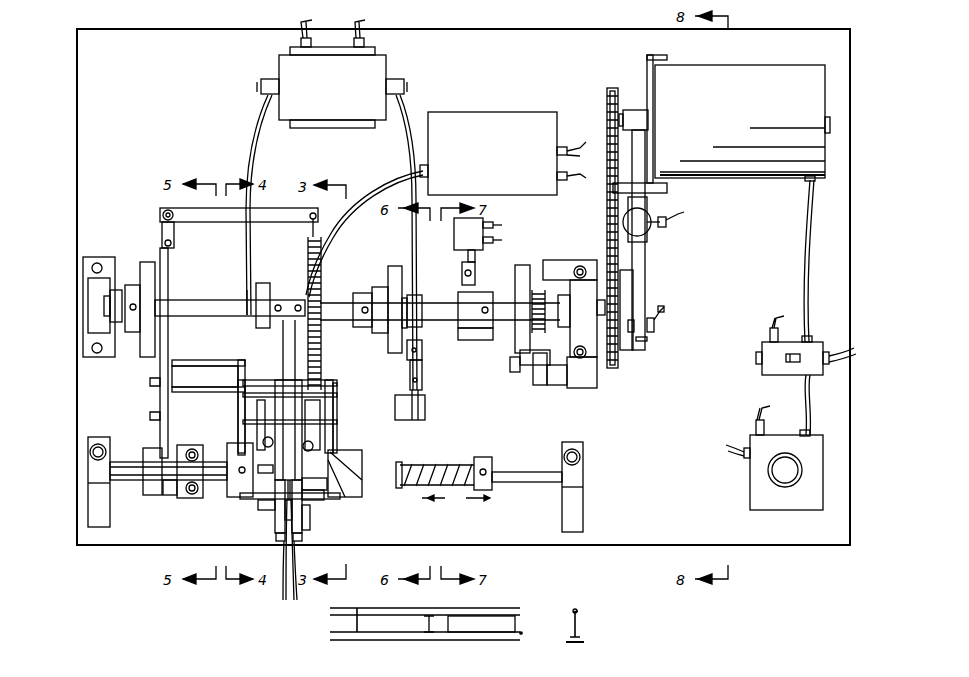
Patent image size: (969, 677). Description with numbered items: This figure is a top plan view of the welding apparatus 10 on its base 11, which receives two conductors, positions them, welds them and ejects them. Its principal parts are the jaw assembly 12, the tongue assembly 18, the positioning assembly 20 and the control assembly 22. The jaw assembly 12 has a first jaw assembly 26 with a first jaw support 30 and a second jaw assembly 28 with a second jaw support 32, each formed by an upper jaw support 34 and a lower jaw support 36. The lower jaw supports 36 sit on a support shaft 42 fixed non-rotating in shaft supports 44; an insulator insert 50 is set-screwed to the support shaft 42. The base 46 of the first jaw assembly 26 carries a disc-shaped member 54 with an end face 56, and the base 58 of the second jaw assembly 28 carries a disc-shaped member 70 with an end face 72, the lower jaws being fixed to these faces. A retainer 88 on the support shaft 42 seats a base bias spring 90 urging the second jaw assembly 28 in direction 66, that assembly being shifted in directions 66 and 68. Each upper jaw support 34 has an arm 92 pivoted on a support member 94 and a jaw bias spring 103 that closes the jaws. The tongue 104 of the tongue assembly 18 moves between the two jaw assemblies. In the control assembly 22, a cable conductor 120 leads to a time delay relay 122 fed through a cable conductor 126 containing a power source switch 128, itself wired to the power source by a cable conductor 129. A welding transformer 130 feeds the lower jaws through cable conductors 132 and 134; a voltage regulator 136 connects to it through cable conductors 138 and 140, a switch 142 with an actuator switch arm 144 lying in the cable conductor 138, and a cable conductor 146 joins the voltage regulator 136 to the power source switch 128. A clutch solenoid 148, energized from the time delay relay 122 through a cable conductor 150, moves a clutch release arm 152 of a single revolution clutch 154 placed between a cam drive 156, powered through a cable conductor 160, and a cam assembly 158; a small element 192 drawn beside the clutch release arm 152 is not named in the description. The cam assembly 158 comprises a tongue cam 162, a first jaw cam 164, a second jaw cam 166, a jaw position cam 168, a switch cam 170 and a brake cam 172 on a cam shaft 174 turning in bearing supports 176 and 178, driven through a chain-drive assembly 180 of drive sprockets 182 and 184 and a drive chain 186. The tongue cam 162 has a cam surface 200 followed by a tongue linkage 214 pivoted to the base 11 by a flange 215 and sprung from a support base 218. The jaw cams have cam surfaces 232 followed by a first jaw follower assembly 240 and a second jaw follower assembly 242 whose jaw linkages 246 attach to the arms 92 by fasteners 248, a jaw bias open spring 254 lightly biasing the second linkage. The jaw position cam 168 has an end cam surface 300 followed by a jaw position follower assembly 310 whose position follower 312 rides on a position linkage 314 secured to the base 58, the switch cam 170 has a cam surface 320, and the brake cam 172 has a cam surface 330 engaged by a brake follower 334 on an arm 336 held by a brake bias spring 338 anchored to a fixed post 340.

The welding apparatus 10 is at (205, 103).
The base 11 is at (768, 545).
The jaw assembly 12 is at (272, 535).
The tongue assembly 18 is at (292, 505).
The positioning assembly 20 is at (430, 412).
The control assembly 22 is at (520, 106).
The first jaw assembly 26 is at (242, 515).
The second jaw assembly 28 is at (305, 535).
The first jaw support 30 is at (272, 518).
The second jaw support 32 is at (322, 500).
The upper jaw support 34 is at (232, 455).
The lower jaw support 36 is at (279, 542).
The support shaft 42 is at (526, 478).
The shaft support 44 is at (90, 510).
The base 46 is at (264, 510).
The insulator insert 50 is at (190, 448).
The disc-shaped member 54 is at (281, 568).
The end face 56 is at (284, 616).
The base 58 is at (345, 478).
The direction 66 is at (448, 502).
The direction 68 is at (482, 502).
The disc-shaped member 70 is at (308, 522).
The end face 72 is at (293, 568).
The retainer 88 is at (492, 462).
The base bias spring 90 is at (455, 470).
The arm 92 is at (250, 410).
The support member 94 is at (266, 402).
The jaw bias spring 103 is at (263, 440).
The tongue 104 is at (284, 372).
The cable conductor 120 is at (402, 173).
The time delay relay 122 is at (480, 121).
The cable conductor 126 is at (580, 176).
The power source switch 128 is at (761, 357).
The cable conductor 129 is at (840, 342).
The welding transformer 130 is at (282, 60).
The cable conductor 132 is at (264, 103).
The cable conductor 134 is at (411, 230).
The voltage regulator 136 is at (785, 500).
The cable conductor 138 is at (367, 24).
The cable conductor 140 is at (300, 24).
The switch 142 is at (456, 242).
The actuator switch arm 144 is at (462, 278).
The cable conductor 146 is at (810, 403).
The clutch solenoid 148 is at (660, 230).
The cable conductor 150 is at (585, 142).
The clutch release arm 152 is at (649, 325).
The single revolution clutch 154 is at (658, 312).
The cam drive 156 is at (758, 75).
The cam assembly 158 is at (476, 370).
The cable conductor 160 is at (806, 222).
The tongue cam 162 is at (145, 262).
The first jaw cam 164 is at (263, 283).
The second jaw cam 166 is at (375, 292).
The jaw position cam 168 is at (391, 284).
The switch cam 170 is at (478, 328).
The brake cam 172 is at (522, 360).
The cam shaft 174 is at (180, 303).
The bearing support 176 is at (100, 292).
The bearing support 178 is at (628, 355).
The chain-drive assembly 180 is at (609, 84).
The drive sprocket 182 is at (605, 104).
The drive sprocket 184 is at (606, 268).
The drive chain 186 is at (645, 259).
The stop 192 is at (642, 341).
The cam surface 200 is at (116, 290).
The tongue linkage 214 is at (186, 358).
The flange 215 is at (182, 502).
The support base 218 is at (162, 212).
The cam surface 232 is at (343, 235).
The first jaw follower assembly 240 is at (230, 322).
The second jaw follower assembly 242 is at (404, 300).
The jaw linkage 246 is at (243, 370).
The fastener 248 is at (243, 384).
The jaw bias open spring 254 is at (308, 244).
The cam surface 300 is at (420, 326).
The jaw position follower assembly 310 is at (425, 394).
The position follower 312 is at (422, 350).
The position linkage 314 is at (422, 380).
The cam surface 320 is at (478, 300).
The cam surface 330 is at (524, 266).
The brake follower 334 is at (538, 386).
The arm 336 is at (560, 385).
The brake bias spring 338 is at (584, 372).
The fixed post 340 is at (544, 262).